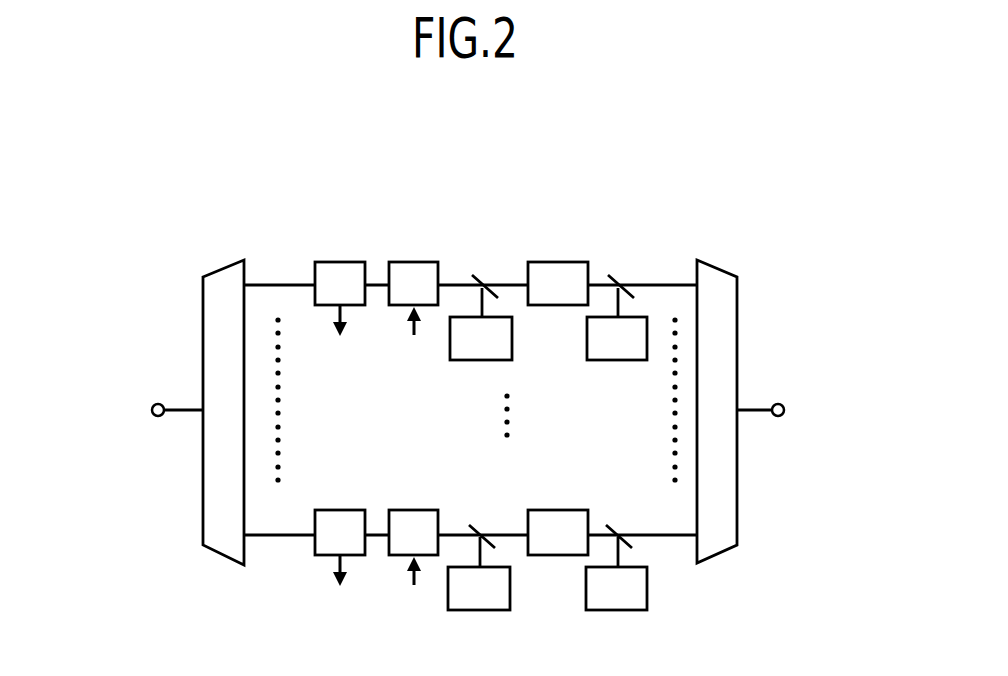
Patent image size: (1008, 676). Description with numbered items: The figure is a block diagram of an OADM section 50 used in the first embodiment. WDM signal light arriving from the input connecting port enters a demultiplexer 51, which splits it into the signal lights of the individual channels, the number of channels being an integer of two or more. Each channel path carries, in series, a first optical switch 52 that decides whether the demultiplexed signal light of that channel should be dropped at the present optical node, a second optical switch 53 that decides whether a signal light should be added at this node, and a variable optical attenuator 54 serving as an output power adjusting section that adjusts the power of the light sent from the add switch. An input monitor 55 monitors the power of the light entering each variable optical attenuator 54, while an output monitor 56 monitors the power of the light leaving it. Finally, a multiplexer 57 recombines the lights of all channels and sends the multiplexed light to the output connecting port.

The OADM section 50 is at (244, 178).
The demultiplexer 51 is at (217, 270).
The optical switch 52 is at (340, 262).
The optical switch 53 is at (413, 262).
The variable optical attenuator 54 is at (557, 262).
The input monitor 55 is at (486, 266).
The output monitor 56 is at (624, 266).
The multiplexer 57 is at (725, 268).